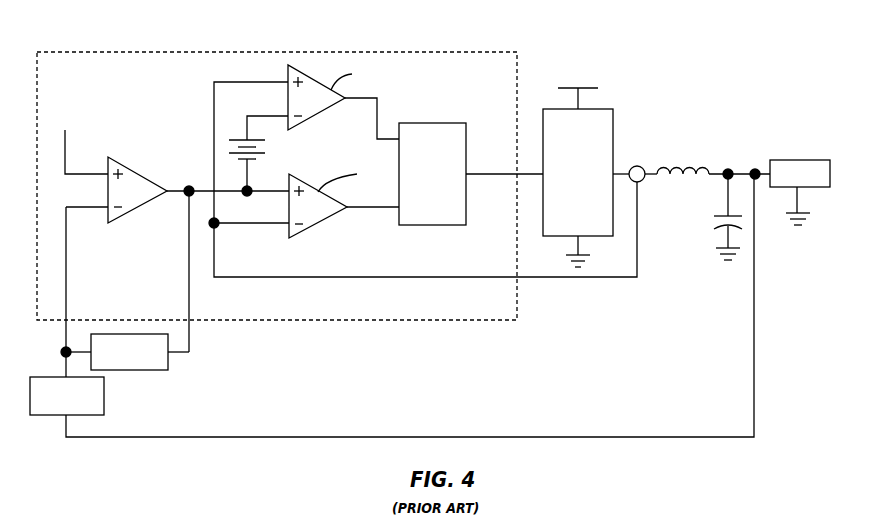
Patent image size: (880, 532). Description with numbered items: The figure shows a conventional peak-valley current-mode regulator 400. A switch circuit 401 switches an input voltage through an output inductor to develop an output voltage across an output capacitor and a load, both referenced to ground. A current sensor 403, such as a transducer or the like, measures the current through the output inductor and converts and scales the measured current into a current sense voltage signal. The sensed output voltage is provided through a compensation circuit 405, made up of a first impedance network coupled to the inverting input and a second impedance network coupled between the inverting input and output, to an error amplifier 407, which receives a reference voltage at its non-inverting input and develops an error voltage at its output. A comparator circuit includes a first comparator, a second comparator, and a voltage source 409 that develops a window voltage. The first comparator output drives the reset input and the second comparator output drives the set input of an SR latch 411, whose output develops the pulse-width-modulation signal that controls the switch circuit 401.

The peak-valley current-mode regulator 400 is at (636, 37).
The switch circuit 401 is at (613, 130).
The current sensor 403 is at (637, 166).
The compensation circuit 405 is at (156, 392).
The error amplifier 407 is at (124, 212).
The voltage source 409 is at (264, 151).
The SR latch 411 is at (433, 123).